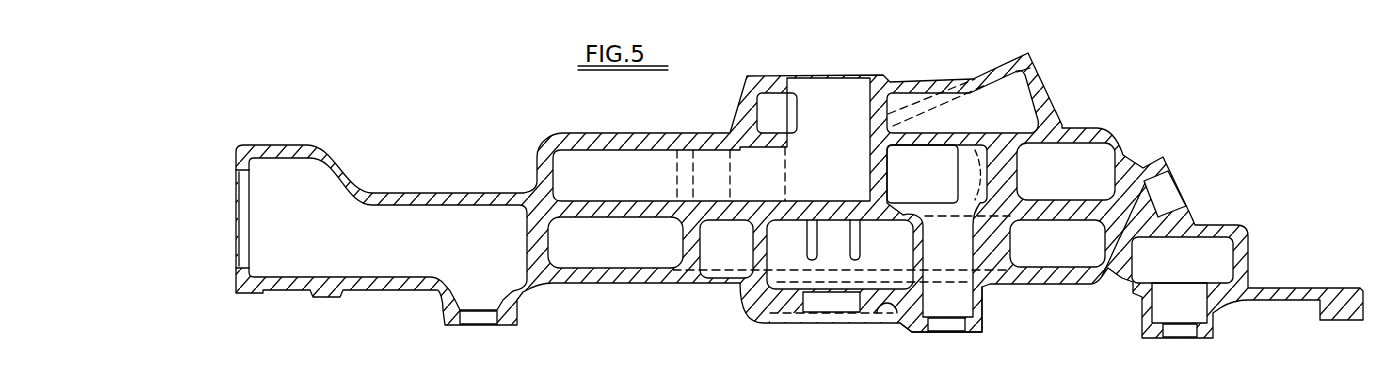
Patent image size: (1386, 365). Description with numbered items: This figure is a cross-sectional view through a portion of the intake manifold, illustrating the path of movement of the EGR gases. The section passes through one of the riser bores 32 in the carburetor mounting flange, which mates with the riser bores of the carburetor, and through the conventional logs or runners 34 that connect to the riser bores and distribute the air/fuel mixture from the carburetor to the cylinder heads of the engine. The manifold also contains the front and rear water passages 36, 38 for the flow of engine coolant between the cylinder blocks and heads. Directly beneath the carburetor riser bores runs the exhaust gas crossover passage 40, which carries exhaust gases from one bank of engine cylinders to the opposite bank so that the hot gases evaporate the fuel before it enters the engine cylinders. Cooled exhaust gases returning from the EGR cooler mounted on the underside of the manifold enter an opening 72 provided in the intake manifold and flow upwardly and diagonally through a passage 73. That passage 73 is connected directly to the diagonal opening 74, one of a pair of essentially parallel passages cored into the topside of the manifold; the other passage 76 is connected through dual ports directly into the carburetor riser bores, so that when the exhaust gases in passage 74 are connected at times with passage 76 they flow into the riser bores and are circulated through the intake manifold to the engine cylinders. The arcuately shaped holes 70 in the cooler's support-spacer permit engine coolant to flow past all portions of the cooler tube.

The riser bores 32 is at (833, 88).
The logs or runners 34 is at (642, 155).
The front water passage 36 is at (388, 234).
The rear water passage 38 is at (1200, 273).
The exhaust gas crossover passage 40 is at (847, 267).
The arcuately shaped holes 70 is at (947, 325).
The opening 72 is at (957, 300).
The passage 73 is at (942, 183).
The diagonal opening 74 is at (988, 85).
The passage 76 is at (1012, 112).